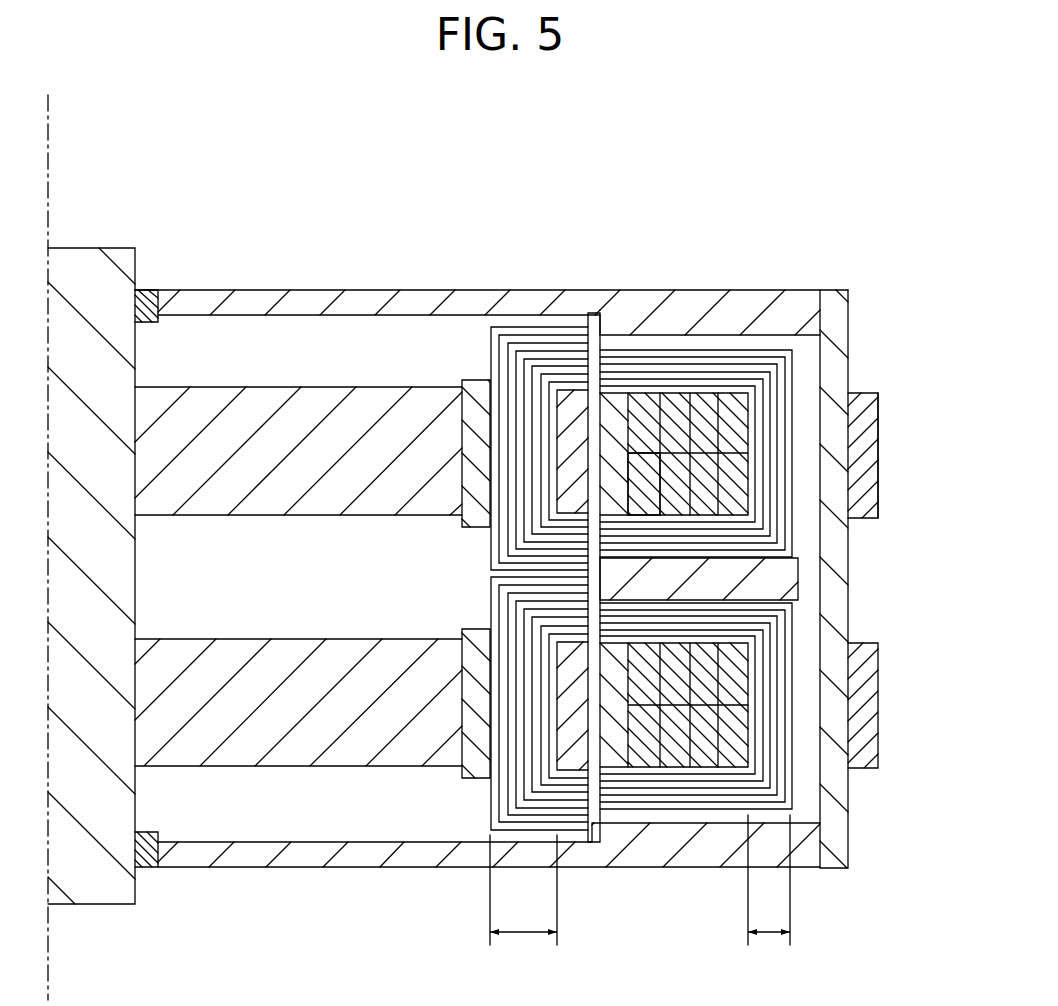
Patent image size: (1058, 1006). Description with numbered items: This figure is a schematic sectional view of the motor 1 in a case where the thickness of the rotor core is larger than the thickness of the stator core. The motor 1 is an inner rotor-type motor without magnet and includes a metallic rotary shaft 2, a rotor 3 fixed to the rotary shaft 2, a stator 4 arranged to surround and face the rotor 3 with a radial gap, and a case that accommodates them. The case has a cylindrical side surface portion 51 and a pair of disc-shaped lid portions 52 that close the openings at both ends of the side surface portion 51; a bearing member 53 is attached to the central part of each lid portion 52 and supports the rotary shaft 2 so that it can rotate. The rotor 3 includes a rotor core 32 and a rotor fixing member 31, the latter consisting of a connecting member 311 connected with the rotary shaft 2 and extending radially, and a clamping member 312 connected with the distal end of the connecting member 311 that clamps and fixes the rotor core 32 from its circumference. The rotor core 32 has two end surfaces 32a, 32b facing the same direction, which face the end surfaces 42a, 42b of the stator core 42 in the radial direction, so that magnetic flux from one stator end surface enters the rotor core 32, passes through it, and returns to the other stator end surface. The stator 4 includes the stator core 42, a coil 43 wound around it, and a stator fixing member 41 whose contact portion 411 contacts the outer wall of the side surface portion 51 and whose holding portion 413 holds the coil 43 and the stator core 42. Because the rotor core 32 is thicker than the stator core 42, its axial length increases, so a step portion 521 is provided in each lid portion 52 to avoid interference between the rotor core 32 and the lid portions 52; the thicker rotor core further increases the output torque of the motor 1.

The motor 1 is at (775, 181).
The rotary shaft 2 is at (97, 258).
The rotor 3 is at (527, 323).
The rotor fixing member 31 is at (298, 499).
The connecting member 311 is at (313, 407).
The clamping member 312 is at (567, 437).
The rotor core 32 is at (486, 347).
The end surface of the rotor core 32a is at (600, 333).
The end surface of the rotor core 32b is at (588, 572).
The stator 4 is at (692, 335).
The stator fixing member 41 is at (882, 462).
The contact portion 411 is at (866, 429).
The holding portion 413 is at (655, 471).
The stator core 42 is at (732, 345).
The end surface of the stator core 42a is at (612, 342).
The end surface of the stator core 42b is at (590, 541).
The coil 43 is at (705, 423).
The side surface portion 51 is at (840, 575).
The lid portion 52 is at (350, 302).
The step portion 521 is at (590, 324).
The bearing member 53 is at (147, 292).